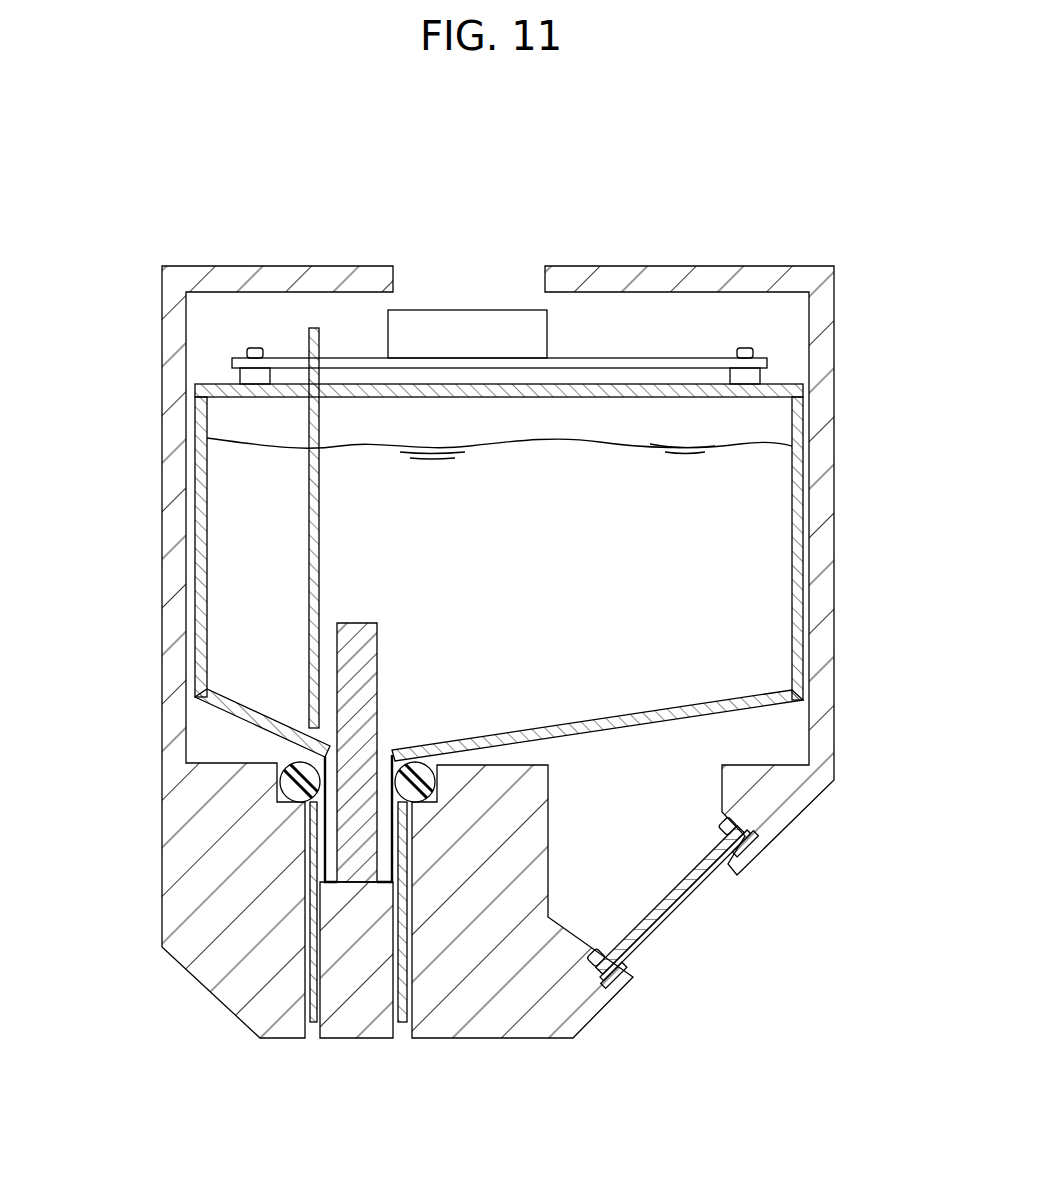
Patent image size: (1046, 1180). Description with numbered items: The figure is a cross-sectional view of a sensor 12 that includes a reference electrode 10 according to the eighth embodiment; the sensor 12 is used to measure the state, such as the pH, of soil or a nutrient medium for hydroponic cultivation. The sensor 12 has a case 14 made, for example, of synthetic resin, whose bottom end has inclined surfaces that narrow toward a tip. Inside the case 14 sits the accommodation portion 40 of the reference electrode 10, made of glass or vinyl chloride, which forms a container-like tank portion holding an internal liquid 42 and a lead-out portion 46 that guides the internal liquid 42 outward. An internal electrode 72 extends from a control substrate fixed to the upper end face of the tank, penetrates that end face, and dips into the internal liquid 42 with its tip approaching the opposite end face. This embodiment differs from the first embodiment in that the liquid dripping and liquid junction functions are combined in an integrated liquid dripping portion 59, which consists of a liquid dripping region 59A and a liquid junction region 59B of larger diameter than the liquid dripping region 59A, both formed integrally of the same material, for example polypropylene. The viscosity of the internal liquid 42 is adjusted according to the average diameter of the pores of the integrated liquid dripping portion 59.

The sensor 12 is at (648, 158).
The reference electrode 10 is at (585, 352).
The case 14 is at (835, 323).
The accommodation portion 40 is at (197, 398).
The internal electrode 72 is at (308, 490).
The internal liquid 42 is at (762, 518).
The integrated liquid dripping portion 59 is at (348, 830).
The liquid dripping region 59A is at (380, 622).
The liquid junction region 59B is at (318, 1040).
The lead-out portion 46 is at (332, 836).